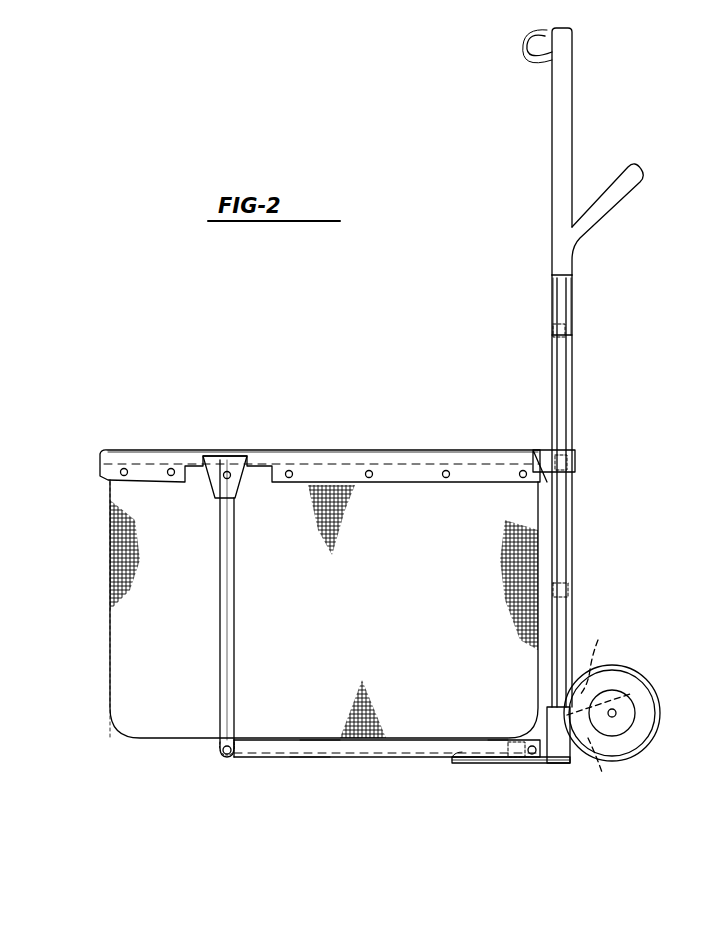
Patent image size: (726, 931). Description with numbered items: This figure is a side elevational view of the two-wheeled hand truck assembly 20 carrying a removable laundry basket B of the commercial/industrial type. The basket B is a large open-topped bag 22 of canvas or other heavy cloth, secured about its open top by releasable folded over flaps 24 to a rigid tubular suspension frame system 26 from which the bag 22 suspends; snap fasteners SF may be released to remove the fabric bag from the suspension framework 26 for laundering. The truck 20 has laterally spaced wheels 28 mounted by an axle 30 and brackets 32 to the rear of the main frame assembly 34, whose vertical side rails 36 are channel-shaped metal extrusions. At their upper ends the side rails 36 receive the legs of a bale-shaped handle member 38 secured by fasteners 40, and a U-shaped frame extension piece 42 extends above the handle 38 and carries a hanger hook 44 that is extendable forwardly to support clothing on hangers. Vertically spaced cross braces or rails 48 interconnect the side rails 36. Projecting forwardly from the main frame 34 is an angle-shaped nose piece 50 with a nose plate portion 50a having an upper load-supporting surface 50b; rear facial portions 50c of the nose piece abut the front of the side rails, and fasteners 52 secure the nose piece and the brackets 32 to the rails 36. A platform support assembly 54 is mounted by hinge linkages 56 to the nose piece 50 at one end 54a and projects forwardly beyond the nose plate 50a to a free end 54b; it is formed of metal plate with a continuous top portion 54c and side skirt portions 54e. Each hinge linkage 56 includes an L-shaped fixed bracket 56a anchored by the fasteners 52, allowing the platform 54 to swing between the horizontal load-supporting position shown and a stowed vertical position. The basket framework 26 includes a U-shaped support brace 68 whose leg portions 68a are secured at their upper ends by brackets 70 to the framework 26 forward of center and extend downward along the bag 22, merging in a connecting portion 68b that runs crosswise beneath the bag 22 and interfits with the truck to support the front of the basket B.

The hand truck assembly 20 is at (460, 208).
The bag 22 is at (160, 722).
The folded over flaps 24 is at (145, 476).
The suspension frame system 26 is at (192, 460).
The wheels 28 is at (630, 668).
The axle 30 is at (615, 710).
The brackets 32 is at (603, 775).
The main frame assembly 34 is at (580, 430).
The vertical side rails 36 is at (573, 386).
The handle member 38 is at (620, 218).
The fasteners 40 is at (552, 285).
The frame extension piece 42 is at (573, 168).
The hanger hook 44 is at (525, 58).
The cross braces or rails 48 is at (553, 330).
The nose piece 50 is at (515, 764).
The nose plate portion 50a is at (475, 765).
The load-supporting surface 50b is at (460, 752).
The rear facial portions 50c is at (540, 735).
The fasteners 52 is at (600, 664).
The platform support assembly 54 is at (352, 758).
The platform end 54a is at (488, 745).
The free end 54b is at (242, 762).
The top portion 54c is at (318, 738).
The side skirt portions 54e is at (308, 752).
The hinge linkages 56 is at (538, 764).
The fixed bracket 56a is at (536, 752).
The support brace 68 is at (235, 590).
The leg portions 68a is at (235, 615).
The connecting portion 68b is at (220, 757).
The brackets 70 is at (247, 460).
The laundry basket B is at (110, 602).
The snap fasteners SF is at (372, 470).